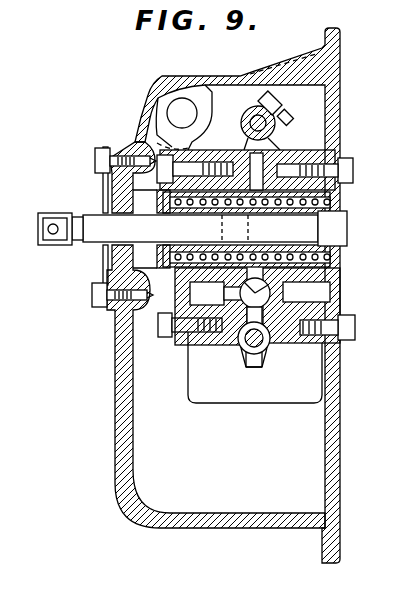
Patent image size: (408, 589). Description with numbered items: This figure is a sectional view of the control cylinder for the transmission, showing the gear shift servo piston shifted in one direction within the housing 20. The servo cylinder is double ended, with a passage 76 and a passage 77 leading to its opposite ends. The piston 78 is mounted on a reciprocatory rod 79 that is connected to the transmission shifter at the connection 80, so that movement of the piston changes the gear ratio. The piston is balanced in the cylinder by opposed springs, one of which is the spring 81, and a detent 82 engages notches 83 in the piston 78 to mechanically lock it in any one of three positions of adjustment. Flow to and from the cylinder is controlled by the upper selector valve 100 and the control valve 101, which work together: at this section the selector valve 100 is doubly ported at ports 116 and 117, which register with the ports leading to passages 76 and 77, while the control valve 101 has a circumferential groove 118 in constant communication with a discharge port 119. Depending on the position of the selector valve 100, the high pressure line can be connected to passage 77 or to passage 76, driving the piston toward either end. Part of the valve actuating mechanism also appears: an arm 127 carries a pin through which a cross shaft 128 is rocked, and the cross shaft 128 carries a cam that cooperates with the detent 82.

The housing 20 is at (237, 80).
The passage 76 is at (211, 306).
The passage 77 is at (332, 292).
The piston 78 is at (165, 197).
The reciprocatory rod 79 is at (92, 243).
The connection to shifter 80 is at (54, 224).
The spring 81 is at (340, 200).
The detent 82 is at (288, 143).
The notches 83 is at (213, 213).
The selector valve 100 is at (318, 250).
The control valve 101 is at (268, 358).
The port 116 is at (283, 332).
The port 117 is at (240, 270).
The circumferential groove 118 is at (242, 365).
The discharge port 119 is at (253, 368).
The arm 127 is at (284, 116).
The cross shaft 128 is at (252, 110).